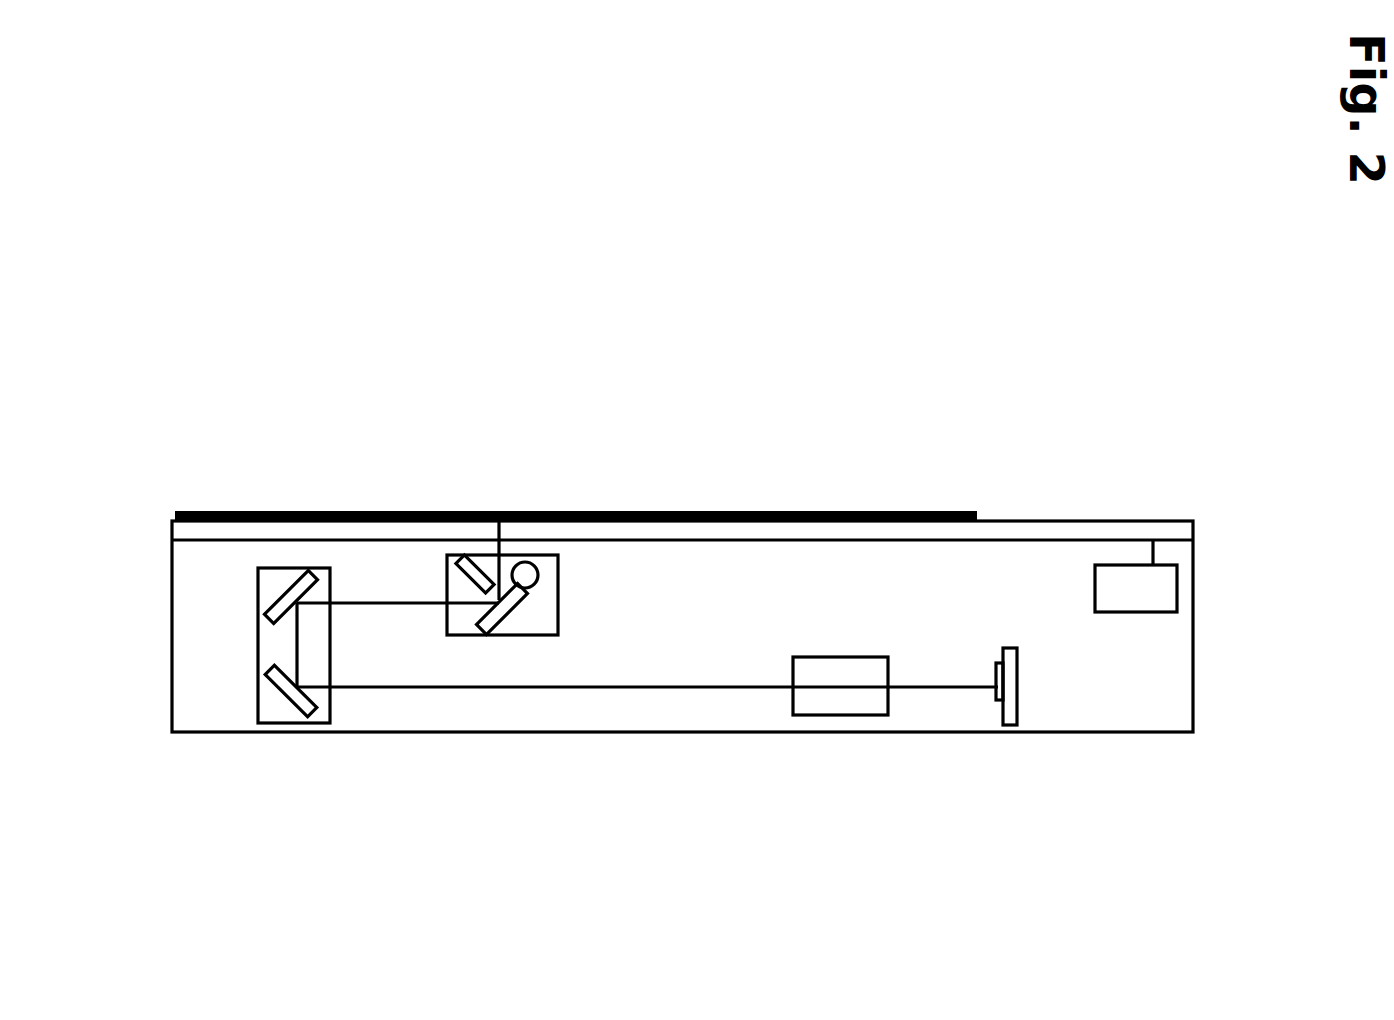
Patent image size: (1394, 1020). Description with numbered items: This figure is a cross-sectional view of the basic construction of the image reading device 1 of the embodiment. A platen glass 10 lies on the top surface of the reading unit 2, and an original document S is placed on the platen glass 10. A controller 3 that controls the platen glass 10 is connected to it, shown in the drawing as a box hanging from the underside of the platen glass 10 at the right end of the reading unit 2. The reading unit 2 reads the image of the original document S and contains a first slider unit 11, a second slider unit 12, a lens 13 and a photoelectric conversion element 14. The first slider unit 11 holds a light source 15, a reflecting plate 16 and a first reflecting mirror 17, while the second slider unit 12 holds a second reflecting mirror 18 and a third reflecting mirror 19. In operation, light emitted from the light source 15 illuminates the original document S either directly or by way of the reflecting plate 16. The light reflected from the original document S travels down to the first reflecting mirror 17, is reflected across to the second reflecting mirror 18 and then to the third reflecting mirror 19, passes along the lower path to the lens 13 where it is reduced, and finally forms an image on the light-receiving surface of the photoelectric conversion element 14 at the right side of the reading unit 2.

The image reading device 1 is at (795, 405).
The reading unit 2 is at (137, 713).
The controller 3 is at (1150, 587).
The platen glass 10 is at (1040, 533).
The first slider unit 11 is at (550, 617).
The second slider unit 12 is at (273, 708).
The lens 13 is at (842, 703).
The photoelectric conversion element 14 is at (1013, 710).
The light source 15 is at (528, 567).
The reflecting plate 16 is at (473, 560).
The first reflecting mirror 17 is at (498, 615).
The second reflecting mirror 18 is at (280, 610).
The third reflecting mirror 19 is at (303, 707).
The original document S is at (250, 512).